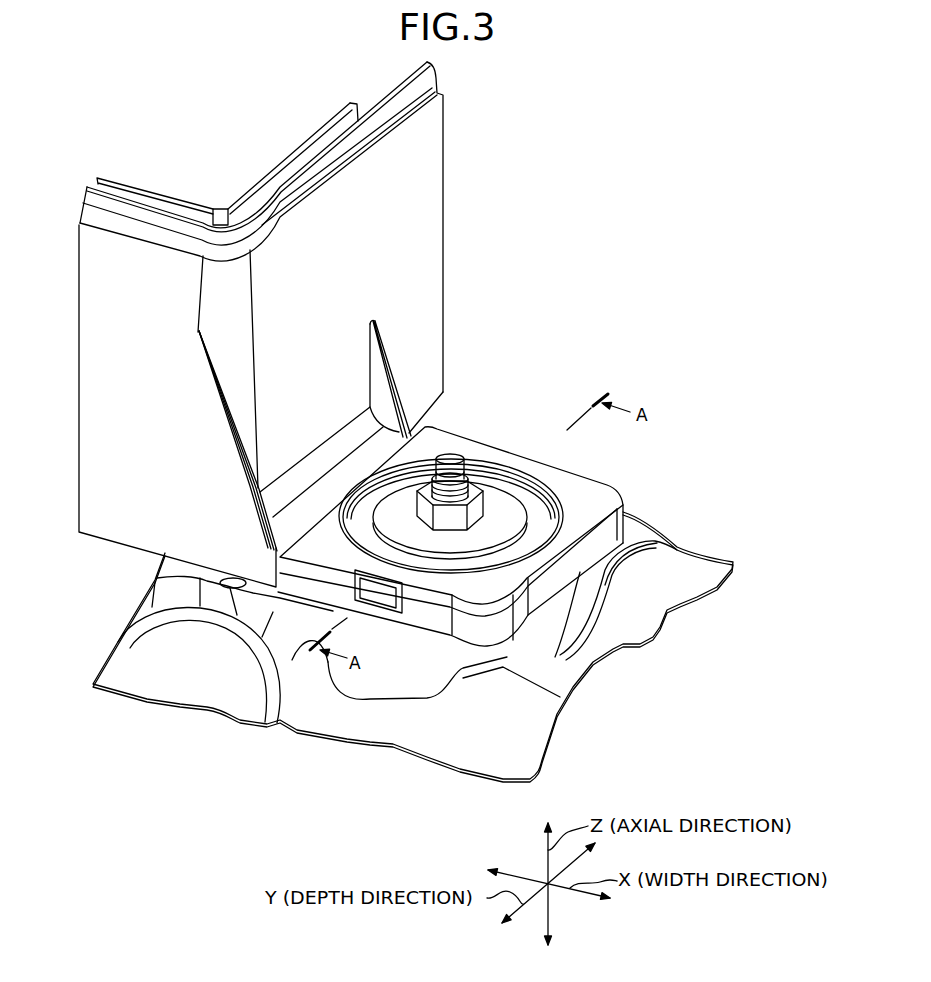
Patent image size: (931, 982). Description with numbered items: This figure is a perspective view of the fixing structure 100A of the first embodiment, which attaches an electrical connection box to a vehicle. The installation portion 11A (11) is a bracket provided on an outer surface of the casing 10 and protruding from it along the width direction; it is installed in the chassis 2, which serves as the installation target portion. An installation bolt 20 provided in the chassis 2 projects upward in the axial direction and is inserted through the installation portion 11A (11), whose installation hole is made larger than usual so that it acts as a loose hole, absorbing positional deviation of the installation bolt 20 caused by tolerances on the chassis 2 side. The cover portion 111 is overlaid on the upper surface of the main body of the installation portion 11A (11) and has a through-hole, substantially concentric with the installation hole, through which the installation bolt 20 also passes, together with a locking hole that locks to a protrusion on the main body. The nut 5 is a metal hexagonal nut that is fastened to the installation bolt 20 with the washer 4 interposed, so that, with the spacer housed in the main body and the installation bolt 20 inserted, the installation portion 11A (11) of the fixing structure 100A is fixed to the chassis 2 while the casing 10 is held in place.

The casing 10 is at (417, 172).
The fixing structure 100A is at (690, 192).
The installation bolt 20 is at (455, 458).
The nut 5 is at (480, 468).
The washer 4 is at (503, 517).
The cover portion 111 is at (583, 490).
The chassis 2 is at (434, 640).
The installation portion 11A is at (657, 632).
The installation portion 11 is at (668, 600).